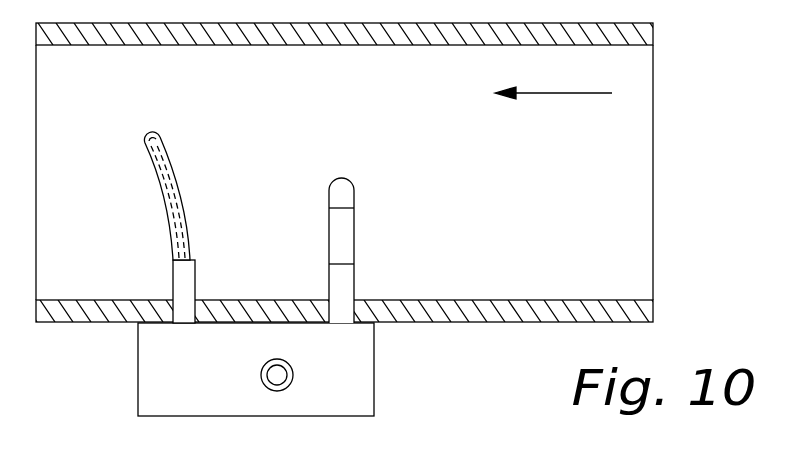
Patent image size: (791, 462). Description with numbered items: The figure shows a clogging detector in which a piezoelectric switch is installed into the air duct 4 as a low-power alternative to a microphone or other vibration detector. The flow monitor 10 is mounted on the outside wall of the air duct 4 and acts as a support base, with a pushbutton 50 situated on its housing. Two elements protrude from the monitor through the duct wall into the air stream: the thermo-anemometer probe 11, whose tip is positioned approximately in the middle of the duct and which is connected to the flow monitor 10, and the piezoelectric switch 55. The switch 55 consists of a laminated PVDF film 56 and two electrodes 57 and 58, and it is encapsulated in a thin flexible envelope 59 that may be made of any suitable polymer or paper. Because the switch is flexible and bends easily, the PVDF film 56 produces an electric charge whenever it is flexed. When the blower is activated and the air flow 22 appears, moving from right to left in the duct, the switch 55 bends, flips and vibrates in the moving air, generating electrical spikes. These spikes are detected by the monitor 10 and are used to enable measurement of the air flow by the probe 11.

The air duct 4 is at (476, 310).
The flow monitor 10 is at (157, 349).
The thermo-anemometer probe 11 is at (375, 201).
The air flow 22 is at (548, 97).
The pushbutton 50 is at (278, 377).
The piezoelectric switch 55 is at (143, 227).
The laminated PVDF film 56 is at (182, 215).
The electrode 57 is at (163, 195).
The electrode 58 is at (168, 155).
The flexible envelope 59 is at (145, 137).